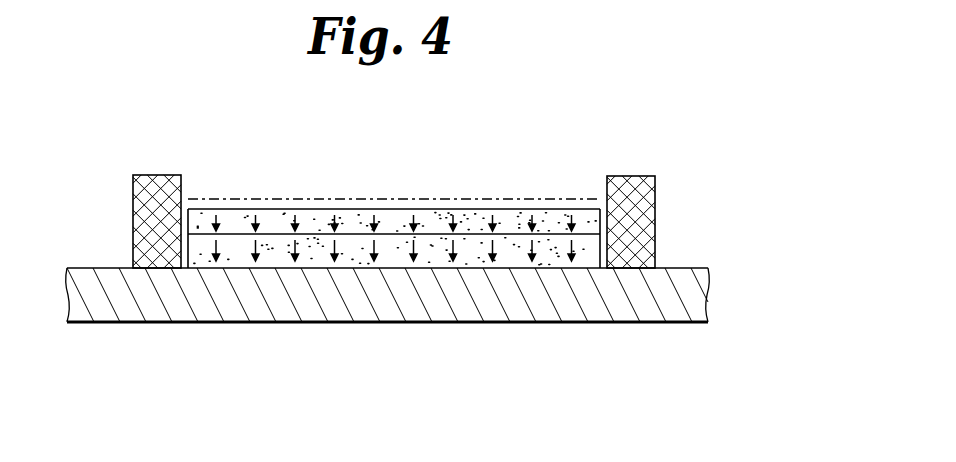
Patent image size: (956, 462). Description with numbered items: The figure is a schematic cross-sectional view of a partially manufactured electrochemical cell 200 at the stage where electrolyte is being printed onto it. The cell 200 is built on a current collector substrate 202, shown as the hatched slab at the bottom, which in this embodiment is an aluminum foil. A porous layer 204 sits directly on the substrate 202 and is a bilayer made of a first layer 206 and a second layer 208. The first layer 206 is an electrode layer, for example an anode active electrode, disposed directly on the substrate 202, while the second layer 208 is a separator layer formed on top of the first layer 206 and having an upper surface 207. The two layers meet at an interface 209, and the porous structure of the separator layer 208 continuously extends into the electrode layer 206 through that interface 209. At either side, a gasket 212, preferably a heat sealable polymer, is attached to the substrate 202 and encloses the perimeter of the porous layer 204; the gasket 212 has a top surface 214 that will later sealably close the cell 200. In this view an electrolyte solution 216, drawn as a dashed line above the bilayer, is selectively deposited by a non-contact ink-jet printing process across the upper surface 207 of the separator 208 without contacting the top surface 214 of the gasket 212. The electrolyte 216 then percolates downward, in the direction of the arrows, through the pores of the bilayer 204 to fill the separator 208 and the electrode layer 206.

The electrochemical cell 200 is at (428, 225).
The current collector substrate 202 is at (688, 292).
The porous layer 204 is at (394, 242).
The first layer 206 is at (317, 252).
The upper surface 207 is at (480, 210).
The second layer 208 is at (435, 220).
The interface 209 is at (277, 232).
The gasket 212 is at (637, 198).
The top surface 214 is at (151, 180).
The electrolyte solution 216 is at (357, 200).